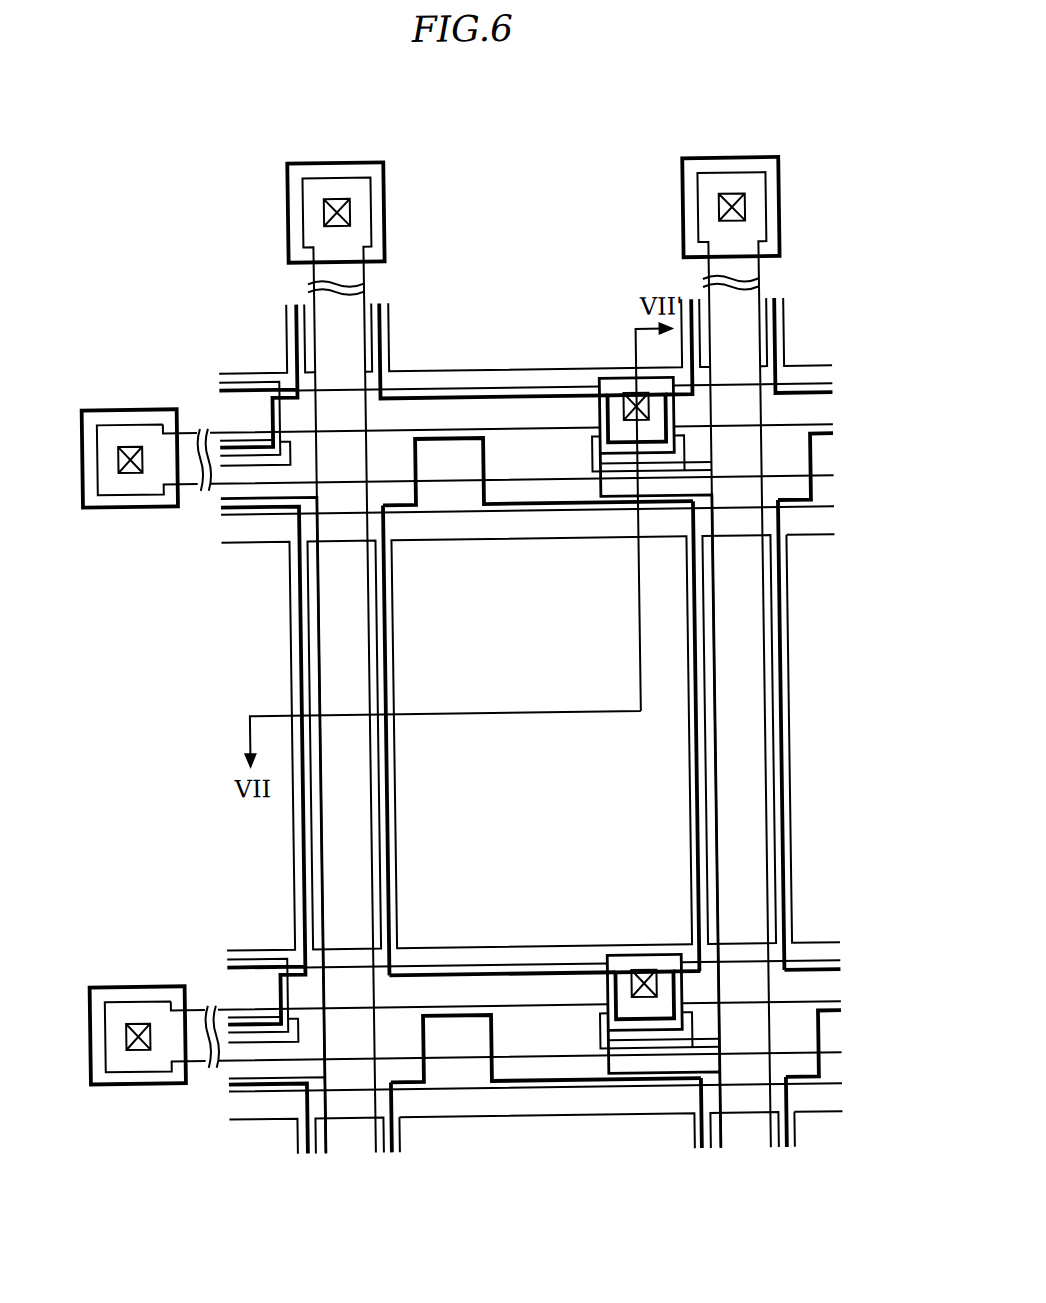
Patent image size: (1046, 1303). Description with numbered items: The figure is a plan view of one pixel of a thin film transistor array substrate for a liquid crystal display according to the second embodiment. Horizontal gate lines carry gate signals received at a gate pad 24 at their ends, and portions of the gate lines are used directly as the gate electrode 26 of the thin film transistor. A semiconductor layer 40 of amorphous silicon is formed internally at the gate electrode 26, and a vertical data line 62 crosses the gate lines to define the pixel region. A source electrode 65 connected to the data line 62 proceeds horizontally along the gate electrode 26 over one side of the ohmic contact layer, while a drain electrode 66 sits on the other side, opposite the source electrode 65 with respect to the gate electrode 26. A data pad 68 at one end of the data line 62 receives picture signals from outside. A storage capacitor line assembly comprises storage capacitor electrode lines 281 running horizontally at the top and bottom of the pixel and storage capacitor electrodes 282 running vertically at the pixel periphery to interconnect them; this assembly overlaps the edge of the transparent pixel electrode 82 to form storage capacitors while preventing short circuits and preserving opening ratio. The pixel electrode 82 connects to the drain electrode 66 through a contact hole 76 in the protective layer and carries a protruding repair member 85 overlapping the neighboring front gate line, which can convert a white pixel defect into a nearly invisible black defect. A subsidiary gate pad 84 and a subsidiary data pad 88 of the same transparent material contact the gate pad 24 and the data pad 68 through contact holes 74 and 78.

The gate pad 24 is at (144, 404).
The gate electrode 26 is at (674, 456).
The semiconductor layer 40 is at (595, 450).
The data line 62 is at (752, 723).
The source electrode 65 is at (620, 502).
The drain electrode 66 is at (603, 408).
The data pad 68 is at (377, 230).
The contact hole 74 is at (121, 450).
The contact hole 76 is at (633, 391).
The contact hole 78 is at (342, 196).
The pixel electrode 82 is at (788, 607).
The subsidiary gate pad 84 is at (148, 501).
The repair member 85 is at (451, 437).
The subsidiary data pad 88 is at (293, 189).
The storage capacitor electrode line 281 is at (535, 538).
The storage capacitor electrode 282 is at (780, 661).